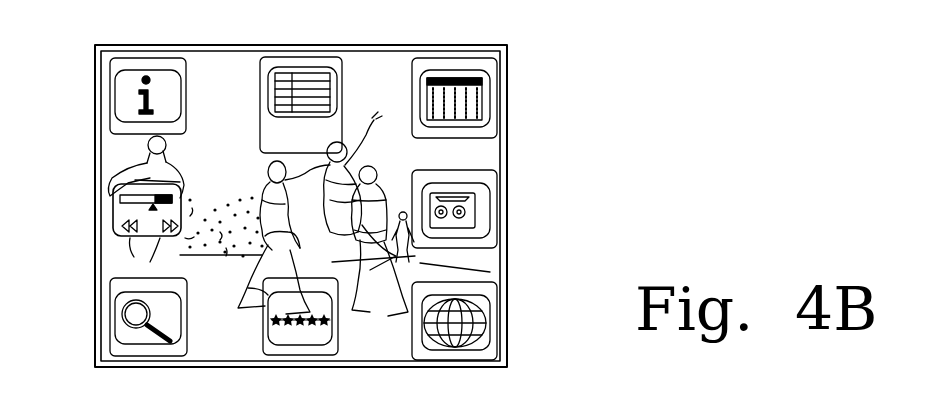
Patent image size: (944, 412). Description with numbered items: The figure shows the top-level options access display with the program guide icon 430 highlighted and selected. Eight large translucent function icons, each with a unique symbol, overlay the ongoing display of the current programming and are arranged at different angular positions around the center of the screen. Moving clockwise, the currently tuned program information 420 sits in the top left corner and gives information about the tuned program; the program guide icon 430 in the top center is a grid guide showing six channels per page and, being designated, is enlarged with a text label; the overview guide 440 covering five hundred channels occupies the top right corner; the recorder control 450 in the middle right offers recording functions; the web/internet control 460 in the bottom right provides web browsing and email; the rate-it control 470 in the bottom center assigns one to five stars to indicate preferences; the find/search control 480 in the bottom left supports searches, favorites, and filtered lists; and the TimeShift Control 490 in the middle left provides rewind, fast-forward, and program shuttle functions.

The currently tuned program information 420 is at (110, 68).
The program guide icon 430 is at (308, 57).
The 500-channel overview guide 440 is at (493, 70).
The recorder control 450 is at (493, 182).
The web/internet control 460 is at (493, 294).
The rate-it control 470 is at (300, 348).
The find/search control 480 is at (110, 294).
The TimeShift Control 490 is at (113, 205).